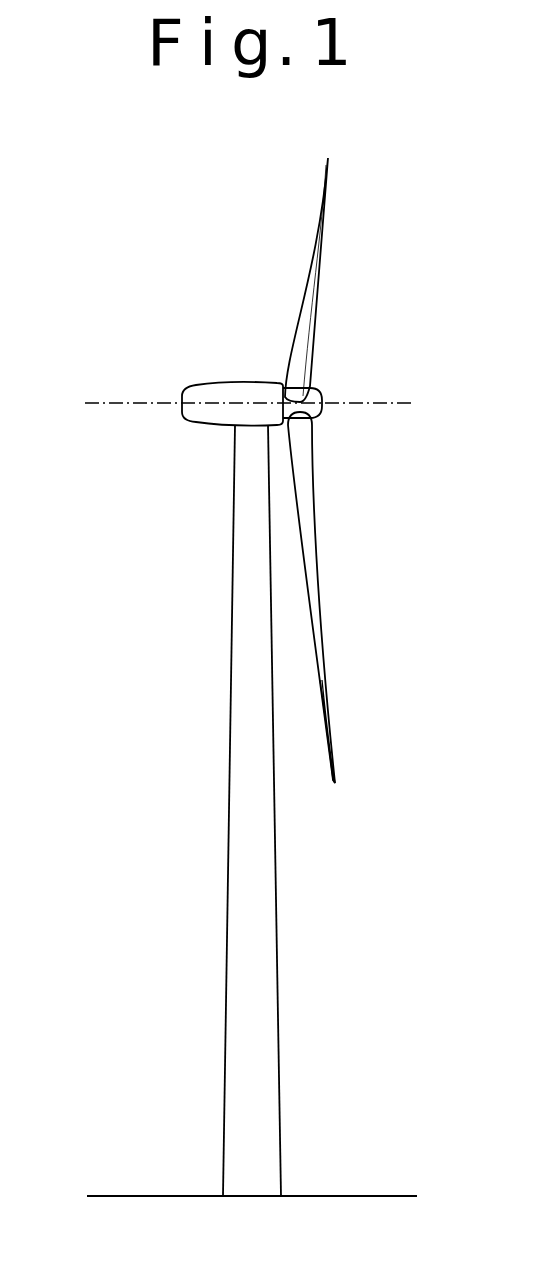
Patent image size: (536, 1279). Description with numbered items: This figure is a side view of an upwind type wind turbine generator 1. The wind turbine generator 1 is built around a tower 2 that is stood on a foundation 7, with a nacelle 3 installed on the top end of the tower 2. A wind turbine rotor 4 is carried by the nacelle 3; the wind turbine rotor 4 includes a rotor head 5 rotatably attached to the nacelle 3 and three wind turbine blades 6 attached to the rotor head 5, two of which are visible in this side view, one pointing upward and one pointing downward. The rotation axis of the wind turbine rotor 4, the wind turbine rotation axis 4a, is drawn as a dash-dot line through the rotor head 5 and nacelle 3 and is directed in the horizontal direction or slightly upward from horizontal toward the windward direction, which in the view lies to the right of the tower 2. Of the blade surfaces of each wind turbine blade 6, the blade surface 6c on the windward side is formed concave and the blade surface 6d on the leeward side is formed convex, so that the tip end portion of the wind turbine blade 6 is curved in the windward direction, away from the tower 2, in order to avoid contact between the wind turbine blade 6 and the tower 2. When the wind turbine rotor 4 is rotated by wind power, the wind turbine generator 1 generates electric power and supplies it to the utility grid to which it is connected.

The wind turbine generator 1 is at (50, 300).
The tower 2 is at (233, 610).
The nacelle 3 is at (240, 390).
The wind turbine rotor 4 is at (357, 492).
The wind turbine rotation axis 4a is at (371, 405).
The rotor head 5 is at (322, 398).
The wind turbine blade 6 is at (322, 225).
The blade surface on the windward side 6c is at (320, 623).
The blade surface on the leeward side 6d is at (322, 700).
The foundation 7 is at (374, 1196).